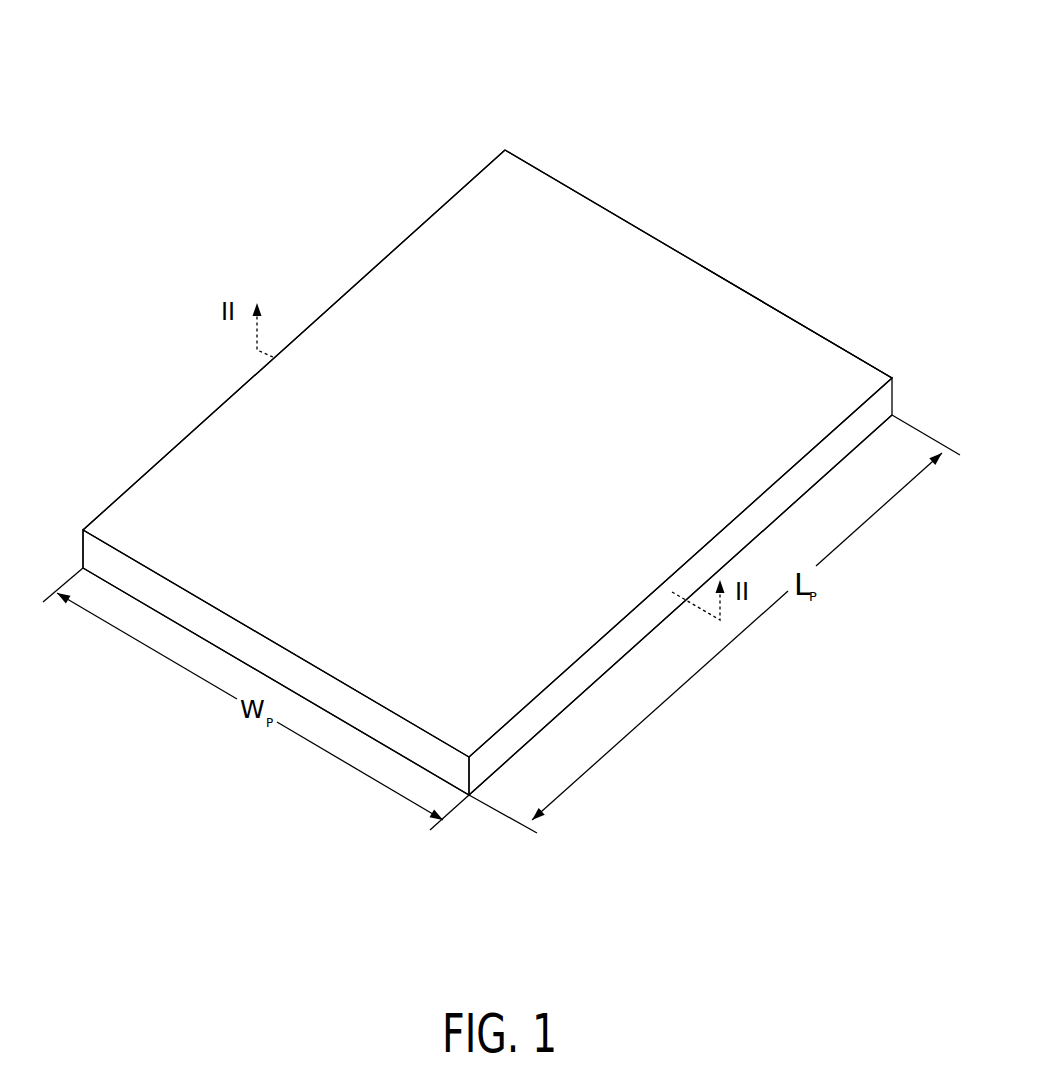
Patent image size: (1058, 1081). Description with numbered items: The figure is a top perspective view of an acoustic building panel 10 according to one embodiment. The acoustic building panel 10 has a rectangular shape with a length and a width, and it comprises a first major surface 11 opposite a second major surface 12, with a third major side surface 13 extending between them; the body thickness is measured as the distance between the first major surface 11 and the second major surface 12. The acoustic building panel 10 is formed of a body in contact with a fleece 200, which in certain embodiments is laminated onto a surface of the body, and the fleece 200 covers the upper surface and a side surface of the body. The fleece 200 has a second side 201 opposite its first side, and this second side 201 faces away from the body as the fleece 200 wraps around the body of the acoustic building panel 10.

The acoustic building panel 10 is at (835, 135).
The first major surface 11 is at (712, 318).
The second major surface 12 is at (578, 700).
The third major side surface 13 is at (188, 610).
The fleece 200 is at (447, 302).
The second side 201 is at (605, 277).